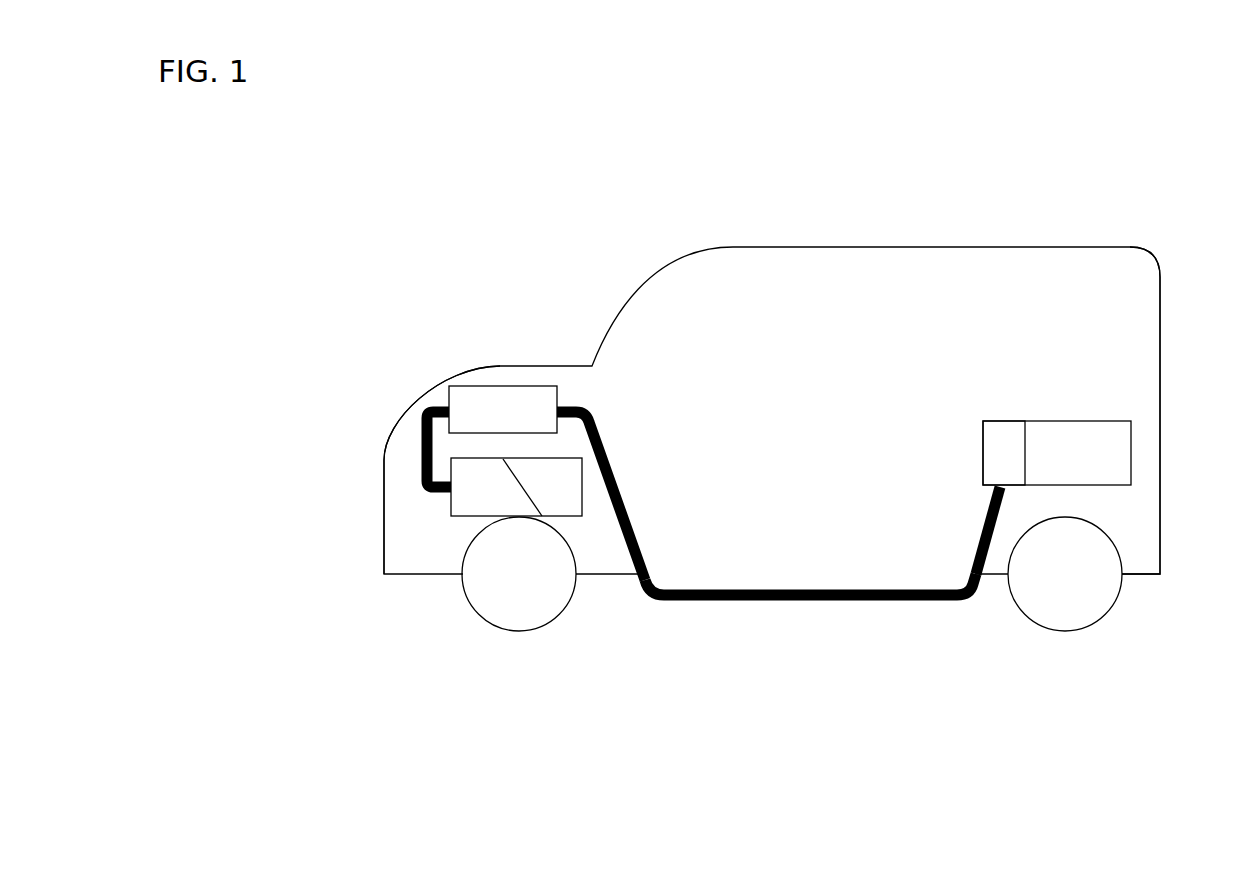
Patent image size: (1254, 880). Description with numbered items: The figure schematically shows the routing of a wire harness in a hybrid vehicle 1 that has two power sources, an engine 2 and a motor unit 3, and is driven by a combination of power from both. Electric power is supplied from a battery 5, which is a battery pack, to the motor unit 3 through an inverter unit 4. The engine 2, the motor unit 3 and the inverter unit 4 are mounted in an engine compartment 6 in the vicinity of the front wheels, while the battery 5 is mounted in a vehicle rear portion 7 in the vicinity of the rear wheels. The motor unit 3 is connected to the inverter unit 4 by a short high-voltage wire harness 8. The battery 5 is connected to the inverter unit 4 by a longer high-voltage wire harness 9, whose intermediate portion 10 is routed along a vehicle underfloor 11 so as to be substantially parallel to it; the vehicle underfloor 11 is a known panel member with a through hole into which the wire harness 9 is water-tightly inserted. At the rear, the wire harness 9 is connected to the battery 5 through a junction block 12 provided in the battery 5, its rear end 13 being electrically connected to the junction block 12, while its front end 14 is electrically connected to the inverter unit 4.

The hybrid vehicle 1 is at (516, 271).
The engine 2 is at (564, 496).
The motor unit 3 is at (464, 499).
The inverter unit 4 is at (478, 402).
The battery 5 is at (1083, 437).
The engine compartment 6 is at (404, 543).
The vehicle rear portion 7 is at (1133, 513).
The high-voltage wire harness 8 is at (414, 437).
The high-voltage wire harness 9 is at (715, 604).
The intermediate portion 10 is at (826, 600).
The vehicle underfloor 11 is at (912, 575).
The junction block 12 is at (995, 432).
The rear end 13 is at (990, 508).
The front end 14 is at (590, 409).